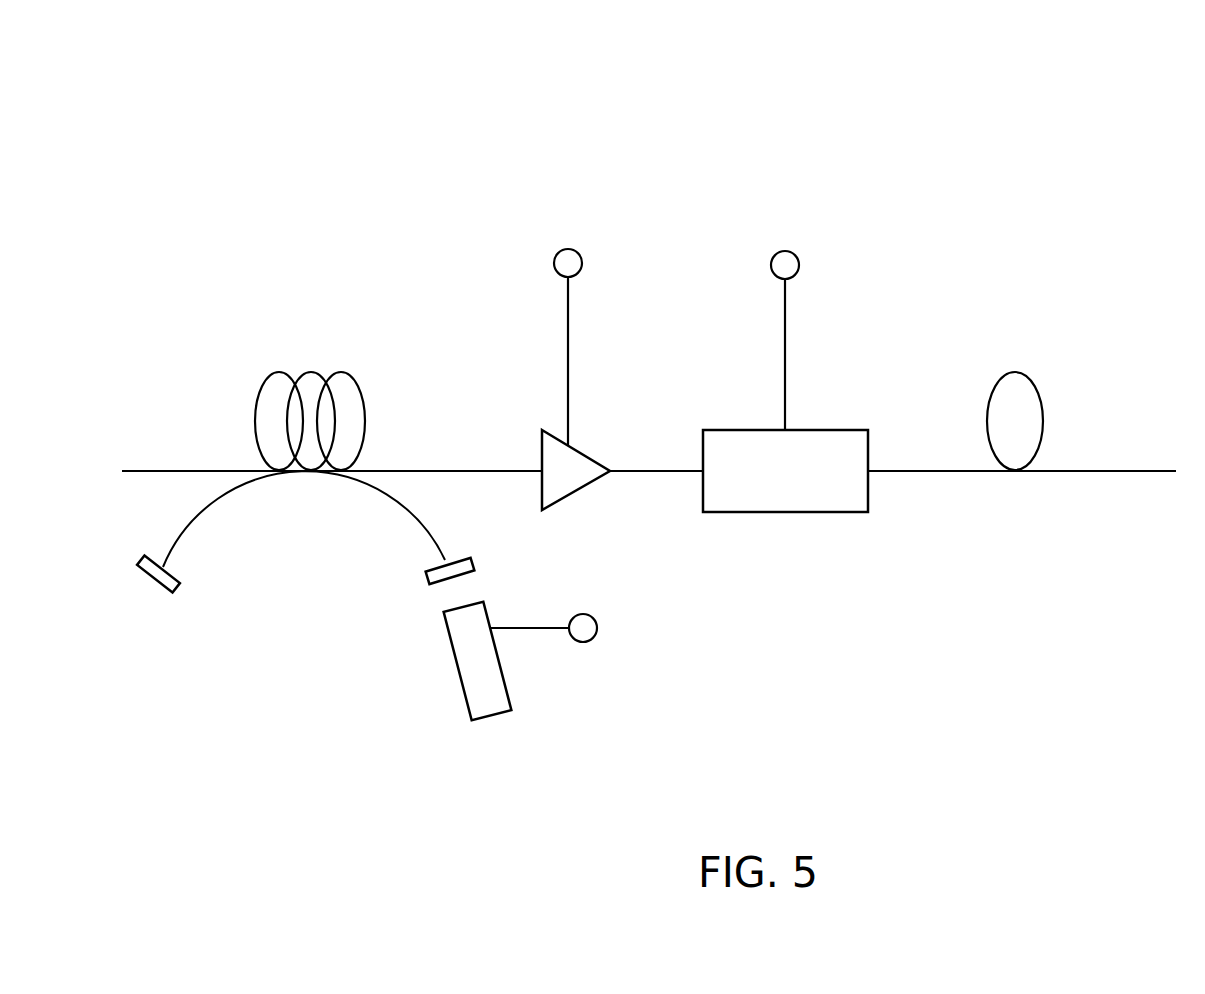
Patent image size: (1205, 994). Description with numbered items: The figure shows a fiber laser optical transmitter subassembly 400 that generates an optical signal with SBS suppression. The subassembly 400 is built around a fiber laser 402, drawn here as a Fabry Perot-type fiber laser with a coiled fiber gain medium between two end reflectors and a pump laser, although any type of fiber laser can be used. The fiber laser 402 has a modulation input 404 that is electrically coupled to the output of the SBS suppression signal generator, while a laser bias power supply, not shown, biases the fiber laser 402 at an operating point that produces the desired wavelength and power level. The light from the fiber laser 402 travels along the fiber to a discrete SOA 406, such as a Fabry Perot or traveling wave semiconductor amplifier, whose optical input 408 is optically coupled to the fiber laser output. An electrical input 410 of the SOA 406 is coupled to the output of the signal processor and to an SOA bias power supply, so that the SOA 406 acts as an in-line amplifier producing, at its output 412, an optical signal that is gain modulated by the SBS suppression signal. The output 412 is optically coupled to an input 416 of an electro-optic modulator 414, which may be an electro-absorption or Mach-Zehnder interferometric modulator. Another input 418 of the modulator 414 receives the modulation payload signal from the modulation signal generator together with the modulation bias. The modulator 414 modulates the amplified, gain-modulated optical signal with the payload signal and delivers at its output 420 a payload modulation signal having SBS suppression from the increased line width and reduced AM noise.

The fiber laser optical transmitter subassembly 400 is at (954, 100).
The fiber laser 402 is at (288, 643).
The modulation input 404 is at (577, 613).
The SOA 406 is at (542, 425).
The optical input 408 is at (542, 462).
The electrical input 410 is at (557, 273).
The output 412 is at (612, 468).
The electro-optic modulator 414 is at (742, 428).
The input 416 is at (702, 472).
The input 418 is at (769, 275).
The output 420 is at (872, 473).